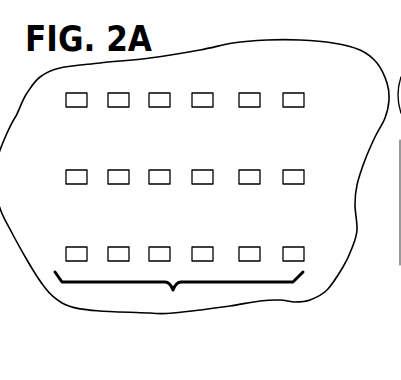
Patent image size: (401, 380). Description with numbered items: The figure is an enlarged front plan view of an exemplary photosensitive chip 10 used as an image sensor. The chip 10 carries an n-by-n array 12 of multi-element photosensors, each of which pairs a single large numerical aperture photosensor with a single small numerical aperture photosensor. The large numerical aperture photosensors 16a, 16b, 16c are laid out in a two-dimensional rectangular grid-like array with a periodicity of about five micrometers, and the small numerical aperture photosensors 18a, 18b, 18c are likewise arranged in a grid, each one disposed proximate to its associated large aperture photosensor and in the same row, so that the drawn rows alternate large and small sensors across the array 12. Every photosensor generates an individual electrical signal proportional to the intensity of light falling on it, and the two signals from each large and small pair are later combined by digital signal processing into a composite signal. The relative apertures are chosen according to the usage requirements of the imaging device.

The photosensitive chip 10 is at (322, 298).
The n×n array of multi-element photosensors 12 is at (173, 290).
The large numerical aperture photosensor 16a is at (68, 93).
The small numerical aperture photosensor 18a is at (118, 93).
The large numerical aperture photosensor 16b is at (160, 93).
The small numerical aperture photosensor 18b is at (203, 92).
The large numerical aperture photosensor 16c is at (256, 93).
The small numerical aperture photosensor 18c is at (297, 93).